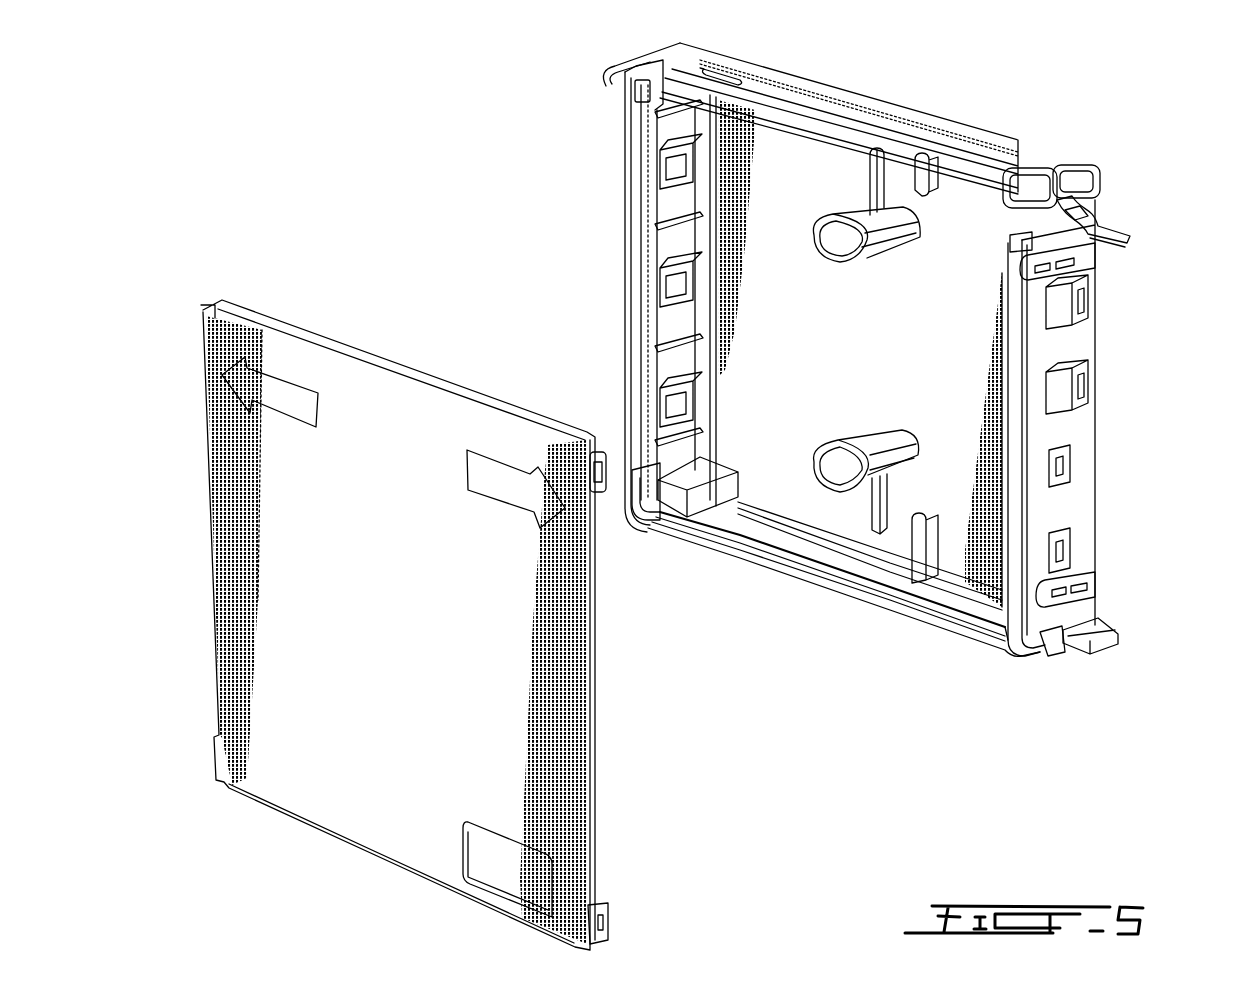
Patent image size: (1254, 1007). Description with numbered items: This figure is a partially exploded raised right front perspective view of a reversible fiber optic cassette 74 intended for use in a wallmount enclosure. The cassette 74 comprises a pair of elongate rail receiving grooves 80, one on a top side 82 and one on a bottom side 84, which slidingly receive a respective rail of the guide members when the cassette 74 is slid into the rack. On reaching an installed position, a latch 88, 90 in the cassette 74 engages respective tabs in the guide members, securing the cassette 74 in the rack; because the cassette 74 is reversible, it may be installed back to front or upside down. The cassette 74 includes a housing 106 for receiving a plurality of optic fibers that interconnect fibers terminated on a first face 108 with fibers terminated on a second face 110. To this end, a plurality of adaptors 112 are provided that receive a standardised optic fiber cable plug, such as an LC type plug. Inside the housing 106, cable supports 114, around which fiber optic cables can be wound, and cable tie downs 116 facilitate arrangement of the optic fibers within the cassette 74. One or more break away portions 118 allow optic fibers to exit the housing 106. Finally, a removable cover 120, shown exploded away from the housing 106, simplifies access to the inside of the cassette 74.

The cassette 74 is at (1070, 128).
The rail receiving grooves 80 is at (962, 140).
The top side 82 is at (893, 105).
The bottom side 84 is at (957, 598).
The latch 88 is at (1118, 235).
The latch 90 is at (1104, 650).
The housing 106 is at (778, 470).
The first face 108 is at (665, 198).
The second face 110 is at (1065, 508).
The adaptors 112 is at (665, 297).
The cable supports 114 is at (830, 230).
The cable tie downs 116 is at (874, 524).
The break away portions 118 is at (1085, 264).
The removable cover 120 is at (342, 755).